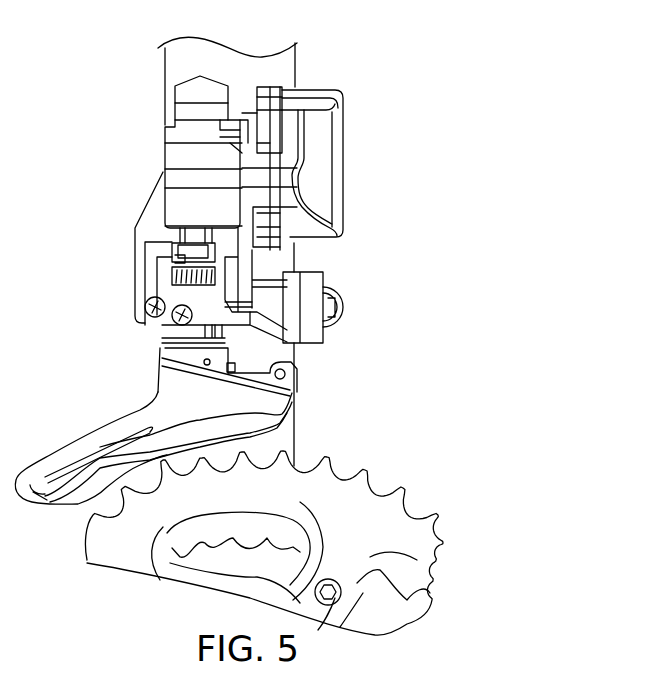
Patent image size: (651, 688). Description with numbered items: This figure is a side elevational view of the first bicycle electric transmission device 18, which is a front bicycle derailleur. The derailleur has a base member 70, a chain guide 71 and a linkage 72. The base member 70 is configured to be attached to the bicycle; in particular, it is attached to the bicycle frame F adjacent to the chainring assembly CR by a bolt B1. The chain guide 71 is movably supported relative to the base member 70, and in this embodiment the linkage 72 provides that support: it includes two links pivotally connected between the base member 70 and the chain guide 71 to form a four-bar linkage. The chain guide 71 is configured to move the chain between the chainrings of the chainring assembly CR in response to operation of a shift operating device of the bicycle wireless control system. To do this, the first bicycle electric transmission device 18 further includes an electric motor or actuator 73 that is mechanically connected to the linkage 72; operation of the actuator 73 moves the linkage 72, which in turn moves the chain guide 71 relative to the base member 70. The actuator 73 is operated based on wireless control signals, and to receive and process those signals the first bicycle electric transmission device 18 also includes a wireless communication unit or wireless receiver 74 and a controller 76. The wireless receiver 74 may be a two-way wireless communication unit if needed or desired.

The bicycle frame F is at (297, 66).
The wireless receiver 74 is at (183, 96).
The controller 76 is at (182, 112).
The first bicycle electric transmission device 18 is at (125, 192).
The linkage 72 is at (162, 280).
The actuator 73 is at (343, 155).
The base member 70 is at (323, 276).
The bolt B1 is at (336, 307).
The chain guide 71 is at (113, 418).
The chainring assembly CR is at (393, 468).